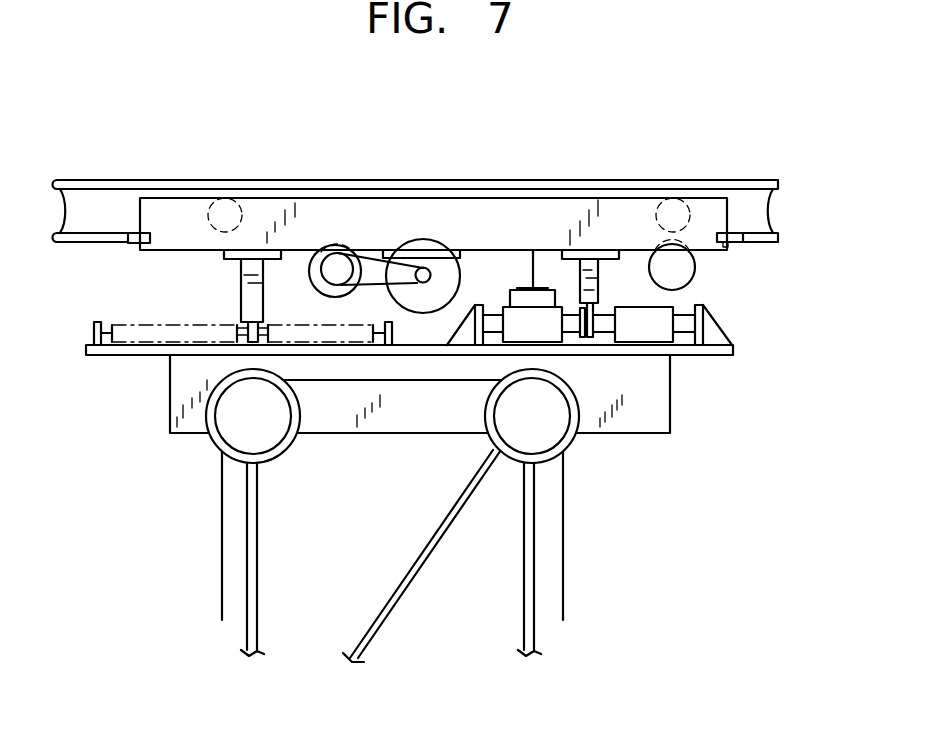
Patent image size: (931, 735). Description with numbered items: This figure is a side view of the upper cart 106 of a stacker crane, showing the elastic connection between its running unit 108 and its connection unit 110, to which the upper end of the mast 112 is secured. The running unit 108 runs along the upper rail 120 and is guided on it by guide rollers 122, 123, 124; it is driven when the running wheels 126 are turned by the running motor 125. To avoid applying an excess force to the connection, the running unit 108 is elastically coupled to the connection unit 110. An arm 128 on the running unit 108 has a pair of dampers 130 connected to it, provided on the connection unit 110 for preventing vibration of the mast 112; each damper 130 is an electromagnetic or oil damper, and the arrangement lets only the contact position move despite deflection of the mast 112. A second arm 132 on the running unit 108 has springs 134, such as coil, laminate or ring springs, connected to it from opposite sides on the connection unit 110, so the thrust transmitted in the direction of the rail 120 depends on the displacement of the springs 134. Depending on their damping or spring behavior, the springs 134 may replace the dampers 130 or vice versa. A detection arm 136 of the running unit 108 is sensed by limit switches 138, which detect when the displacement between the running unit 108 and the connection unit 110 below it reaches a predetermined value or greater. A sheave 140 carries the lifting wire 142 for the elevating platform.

The upper cart 106 is at (707, 625).
The running unit 108 is at (612, 212).
The connection unit 110 is at (645, 408).
The mast 112 is at (545, 639).
The upper rail 120 is at (760, 212).
The guide roller 122 is at (224, 212).
The guide roller 123 is at (680, 267).
The guide roller 124 is at (133, 244).
The running motor 125 is at (436, 266).
The running wheel 126 is at (327, 250).
The arm 128 is at (600, 280).
The damper 130 is at (520, 327).
The arm 132 is at (241, 279).
The spring 134 is at (295, 333).
The detection arm 136 is at (532, 263).
The limit switch 138 is at (556, 293).
The sheave 140 is at (257, 430).
The lifting wire 142 is at (563, 552).